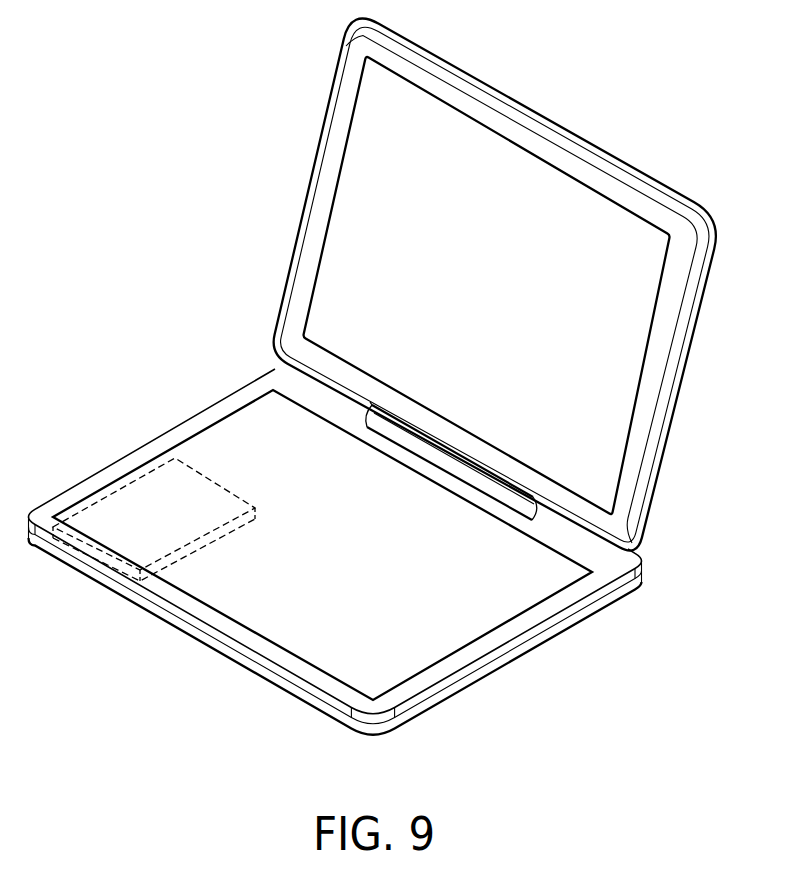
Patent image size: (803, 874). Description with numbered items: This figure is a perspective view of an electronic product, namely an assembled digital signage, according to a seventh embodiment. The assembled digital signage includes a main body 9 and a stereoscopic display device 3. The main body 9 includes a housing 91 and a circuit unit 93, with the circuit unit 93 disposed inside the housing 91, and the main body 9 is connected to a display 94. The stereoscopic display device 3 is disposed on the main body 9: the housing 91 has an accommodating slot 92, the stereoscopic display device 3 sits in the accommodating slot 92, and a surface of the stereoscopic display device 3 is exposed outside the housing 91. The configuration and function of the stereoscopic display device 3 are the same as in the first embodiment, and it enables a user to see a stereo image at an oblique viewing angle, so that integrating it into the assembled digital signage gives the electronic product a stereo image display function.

The main body 9 is at (371, 376).
The housing 91 is at (517, 642).
The accommodating slot 92 is at (218, 421).
The circuit unit 93 is at (108, 508).
The display 94 is at (353, 240).
The stereoscopic display device 3 is at (190, 452).